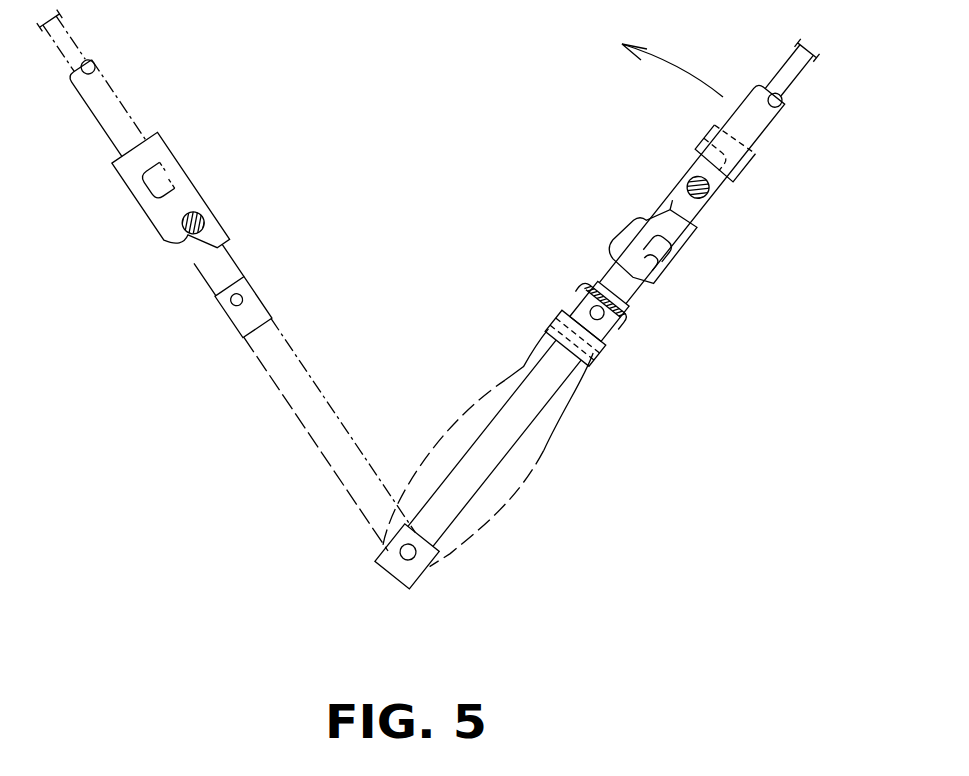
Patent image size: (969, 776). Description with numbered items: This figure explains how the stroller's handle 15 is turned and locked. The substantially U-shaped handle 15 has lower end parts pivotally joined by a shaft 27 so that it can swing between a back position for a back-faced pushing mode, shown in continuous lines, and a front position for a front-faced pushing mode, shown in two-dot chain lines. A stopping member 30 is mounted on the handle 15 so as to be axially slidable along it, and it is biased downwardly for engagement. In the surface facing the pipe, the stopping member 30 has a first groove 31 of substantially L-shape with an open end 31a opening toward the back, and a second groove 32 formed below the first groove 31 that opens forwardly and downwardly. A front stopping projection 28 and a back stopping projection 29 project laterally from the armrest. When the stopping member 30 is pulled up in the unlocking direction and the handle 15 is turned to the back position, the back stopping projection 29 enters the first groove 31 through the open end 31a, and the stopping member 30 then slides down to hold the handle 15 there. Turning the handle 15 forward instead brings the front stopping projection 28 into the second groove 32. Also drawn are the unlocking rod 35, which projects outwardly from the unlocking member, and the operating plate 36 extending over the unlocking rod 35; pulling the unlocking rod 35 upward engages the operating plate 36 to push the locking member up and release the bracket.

The handle 15 is at (757, 128).
The shaft 27 is at (412, 558).
The front stopping projection 28 is at (203, 222).
The back stopping projection 29 is at (710, 190).
The stopping member 30 is at (660, 188).
The first groove 31 is at (640, 216).
The open end 31a is at (693, 222).
The second groove 32 is at (660, 262).
The unlocking rod 35 is at (600, 320).
The operating plate 36 is at (623, 325).